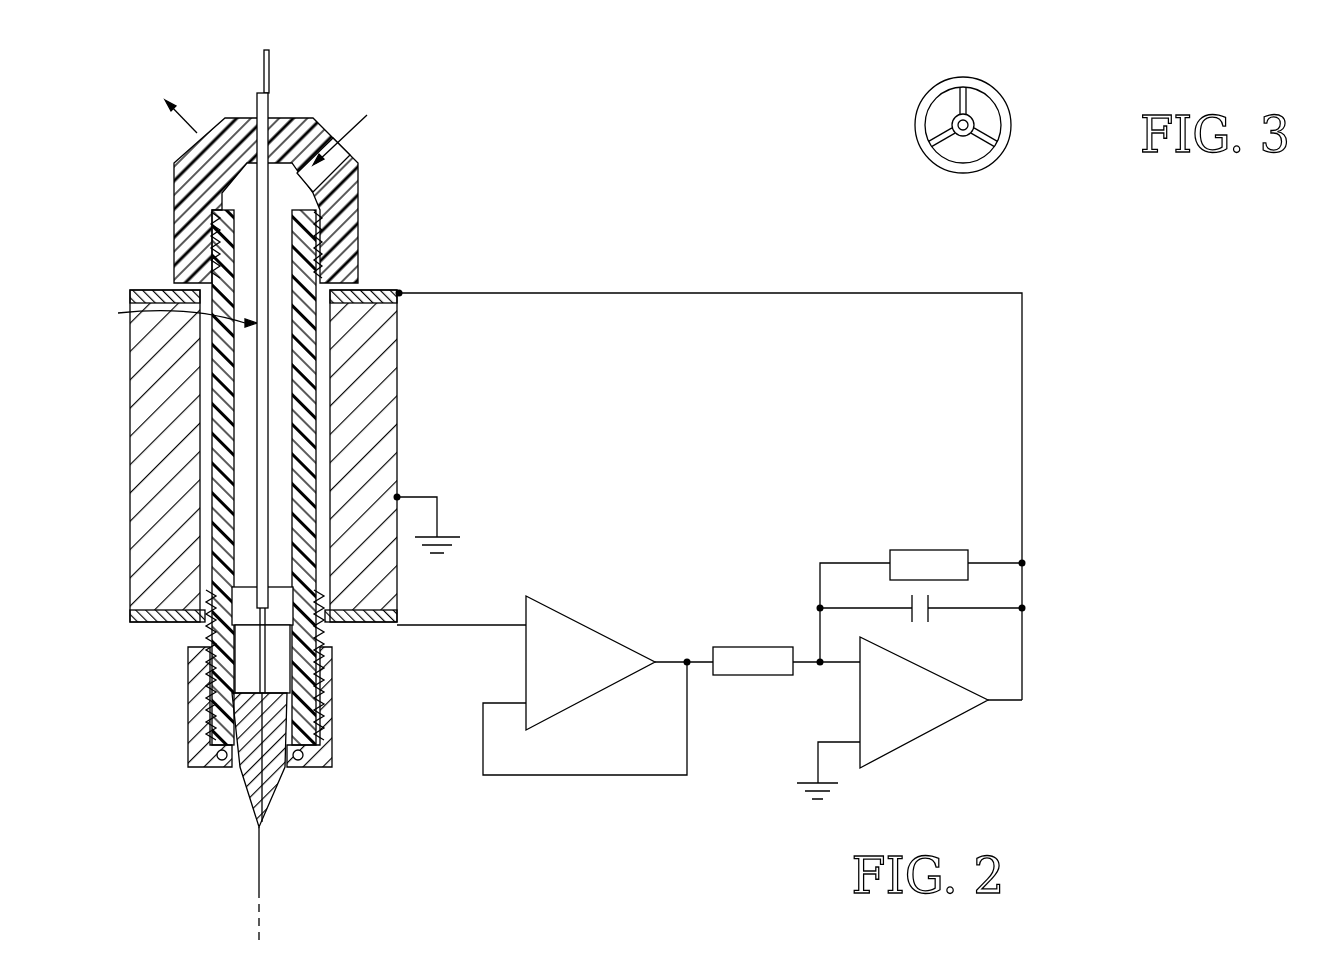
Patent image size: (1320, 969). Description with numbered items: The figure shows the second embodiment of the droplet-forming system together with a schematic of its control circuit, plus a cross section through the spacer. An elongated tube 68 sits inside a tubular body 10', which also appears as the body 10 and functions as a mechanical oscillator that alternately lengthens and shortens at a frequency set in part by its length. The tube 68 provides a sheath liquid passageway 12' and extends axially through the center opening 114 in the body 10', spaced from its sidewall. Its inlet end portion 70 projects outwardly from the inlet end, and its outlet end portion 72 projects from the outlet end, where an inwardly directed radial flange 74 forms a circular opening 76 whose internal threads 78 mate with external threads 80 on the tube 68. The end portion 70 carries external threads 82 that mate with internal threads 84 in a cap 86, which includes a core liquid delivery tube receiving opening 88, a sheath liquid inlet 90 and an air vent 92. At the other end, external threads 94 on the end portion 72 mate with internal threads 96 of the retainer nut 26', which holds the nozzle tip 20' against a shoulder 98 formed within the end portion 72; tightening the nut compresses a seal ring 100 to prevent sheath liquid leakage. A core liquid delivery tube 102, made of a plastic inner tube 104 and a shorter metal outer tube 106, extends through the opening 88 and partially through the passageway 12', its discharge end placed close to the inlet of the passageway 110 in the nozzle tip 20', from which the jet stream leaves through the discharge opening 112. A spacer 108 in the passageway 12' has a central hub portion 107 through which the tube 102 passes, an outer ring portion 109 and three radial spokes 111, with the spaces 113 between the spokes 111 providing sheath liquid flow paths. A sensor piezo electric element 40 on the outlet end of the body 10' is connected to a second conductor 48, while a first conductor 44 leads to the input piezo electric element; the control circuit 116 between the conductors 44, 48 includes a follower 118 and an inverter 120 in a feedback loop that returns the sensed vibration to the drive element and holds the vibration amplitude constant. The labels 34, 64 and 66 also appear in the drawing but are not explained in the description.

In FIG. 2, the tubular body 10 is at (289, 707).
In FIG. 2, the tubular body 10' is at (394, 456).
In FIG. 2, the sheath liquid passageway 12' is at (159, 477).
In FIG. 2, the nozzle tip 20' is at (289, 767).
In FIG. 2, the retainer nut 26' is at (356, 787).
In FIG. 2, the housing block 34 is at (132, 290).
In FIG. 2, the sensor piezo electric element 40 is at (128, 620).
In FIG. 2, the first conductor 44 is at (541, 292).
In FIG. 2, the second conductor 48 is at (470, 627).
In FIG. 2, the axis 64 is at (260, 865).
In FIG. 2, the axis extension 66 is at (260, 923).
In FIG. 2, the elongated tube 68 is at (310, 388).
In FIG. 2, the inlet end portion 70 is at (207, 613).
In FIG. 2, the outlet end portion 72 is at (297, 612).
In FIG. 2, the radial flange 74 is at (227, 595).
In FIG. 2, the circular opening 76 is at (210, 628).
In FIG. 2, the internal threads 78 is at (303, 257).
In FIG. 2, the external threads 80 is at (288, 698).
In FIG. 2, the external threads 82 is at (318, 230).
In FIG. 2, the internal threads 84 is at (217, 230).
In FIG. 2, the cap 86 is at (297, 128).
In FIG. 2, the core liquid delivery tube receiving opening 88 is at (260, 123).
In FIG. 2, the sheath liquid inlet 90 is at (363, 140).
In FIG. 2, the air vent 92 is at (212, 153).
In FIG. 2, the external threads 94 is at (205, 732).
In FIG. 2, the internal threads 96 is at (217, 685).
In FIG. 2, the shoulder 98 is at (207, 658).
In FIG. 2, the seal ring 100 is at (220, 763).
In FIG. 2, the core liquid delivery tube 102 is at (167, 325).
In FIG. 2, the plastic inner tube 104 is at (270, 73).
In FIG. 2, the metal outer tube 106 is at (258, 432).
In FIG. 3, the central hub portion 107 is at (965, 137).
In FIG. 2, the spacer 108 is at (313, 585).
In FIG. 3, the spacer 108 is at (1028, 132).
In FIG. 3, the outer ring portion 109 is at (1010, 110).
In FIG. 2, the passageway 110 is at (260, 775).
In FIG. 3, the radial spokes 111 is at (960, 105).
In FIG. 2, the discharge opening 112 is at (257, 833).
In FIG. 3, the spaces 113 is at (980, 103).
In FIG. 2, the center opening 114 is at (323, 348).
In FIG. 2, the control circuit 116 is at (732, 817).
In FIG. 2, the follower 118 is at (597, 630).
In FIG. 2, the inverter 120 is at (950, 722).